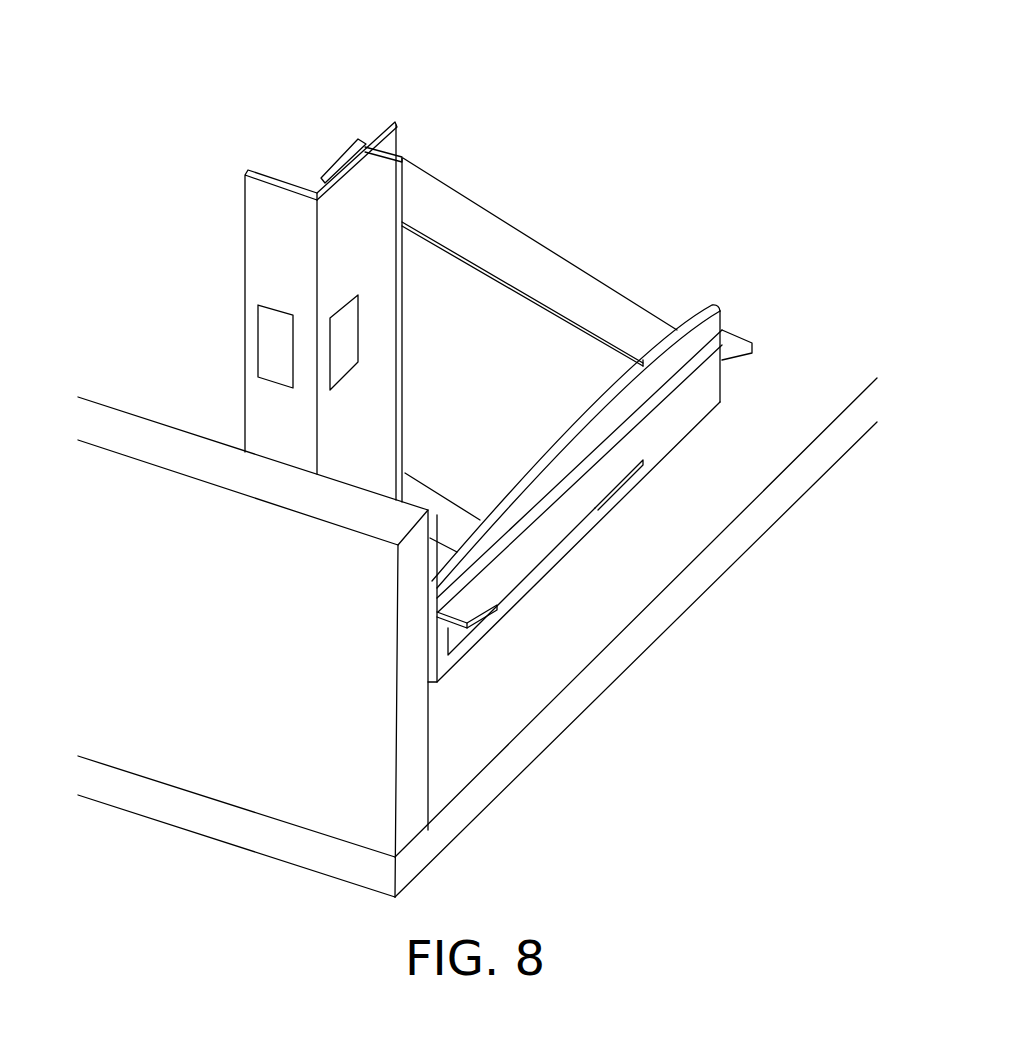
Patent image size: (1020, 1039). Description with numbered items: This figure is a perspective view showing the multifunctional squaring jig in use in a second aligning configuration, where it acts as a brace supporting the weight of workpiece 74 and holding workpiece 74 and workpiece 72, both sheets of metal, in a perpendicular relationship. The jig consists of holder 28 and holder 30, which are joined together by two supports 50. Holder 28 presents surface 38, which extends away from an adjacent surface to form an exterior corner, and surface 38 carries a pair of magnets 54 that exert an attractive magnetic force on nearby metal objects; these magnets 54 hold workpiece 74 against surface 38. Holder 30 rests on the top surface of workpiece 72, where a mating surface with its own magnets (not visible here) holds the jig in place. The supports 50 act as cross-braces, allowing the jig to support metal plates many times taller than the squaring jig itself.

The holder 28 is at (389, 120).
The holder 30 is at (720, 308).
The surface 38 is at (275, 233).
The supports 50 is at (453, 493).
The magnets 54 is at (258, 335).
The workpiece 72 is at (573, 618).
The workpiece 74 is at (151, 462).